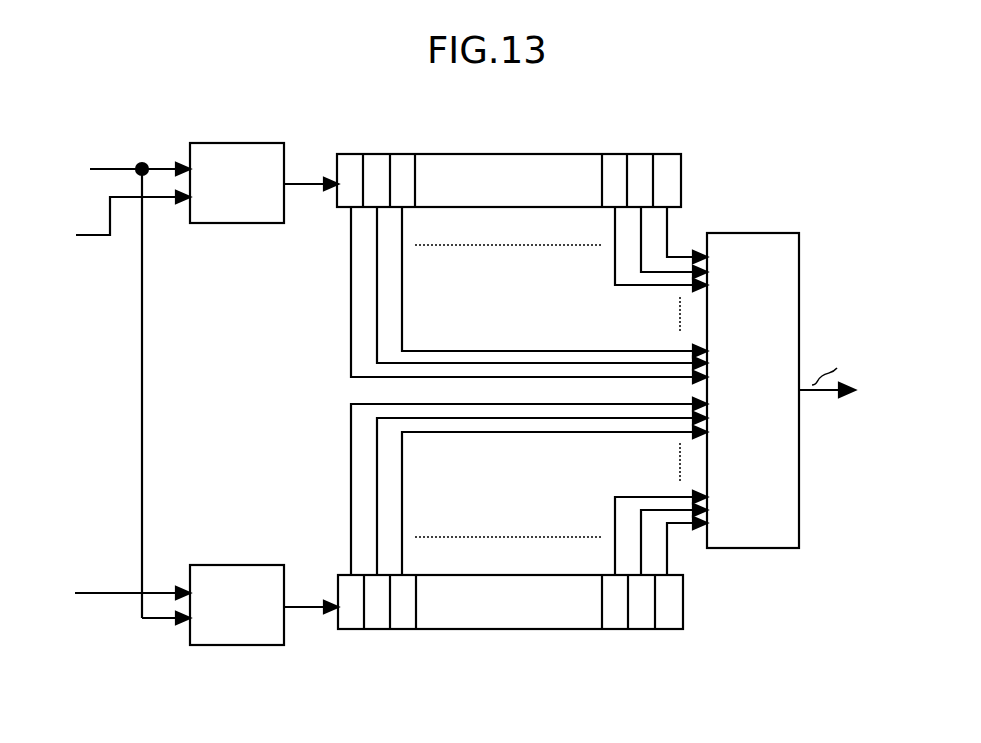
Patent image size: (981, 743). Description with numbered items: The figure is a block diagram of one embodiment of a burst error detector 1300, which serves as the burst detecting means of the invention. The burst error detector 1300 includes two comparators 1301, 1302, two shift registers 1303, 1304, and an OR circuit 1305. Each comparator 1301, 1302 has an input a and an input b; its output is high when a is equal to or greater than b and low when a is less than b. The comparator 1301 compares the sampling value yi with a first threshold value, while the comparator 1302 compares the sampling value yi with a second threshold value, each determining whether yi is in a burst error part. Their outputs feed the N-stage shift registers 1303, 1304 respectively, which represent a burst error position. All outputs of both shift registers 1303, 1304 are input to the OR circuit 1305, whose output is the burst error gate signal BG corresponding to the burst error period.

The burst error detector 1300 is at (841, 121).
The comparator 1301 is at (233, 223).
The comparator 1302 is at (238, 565).
The shift register 1303 is at (488, 152).
The shift register 1304 is at (510, 629).
The OR circuit 1305 is at (799, 454).